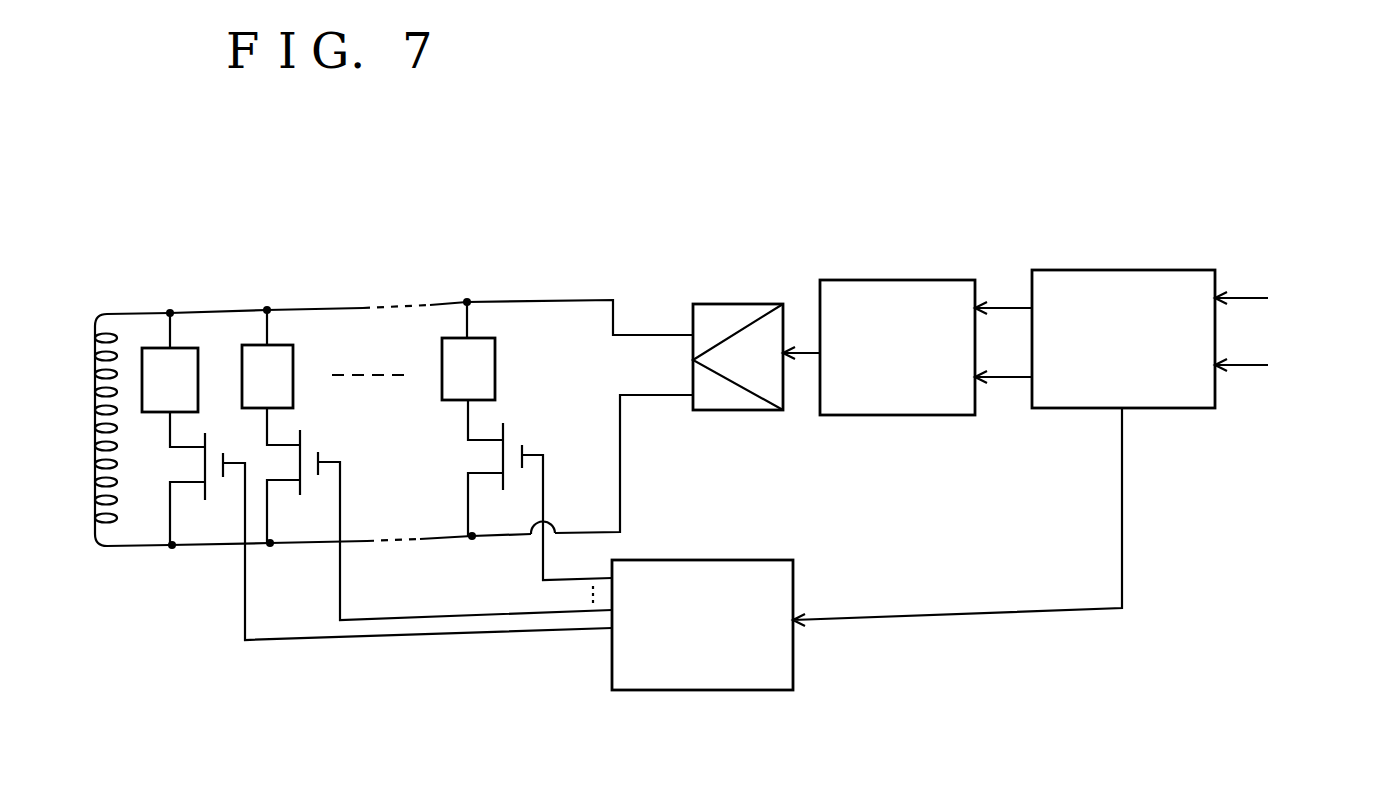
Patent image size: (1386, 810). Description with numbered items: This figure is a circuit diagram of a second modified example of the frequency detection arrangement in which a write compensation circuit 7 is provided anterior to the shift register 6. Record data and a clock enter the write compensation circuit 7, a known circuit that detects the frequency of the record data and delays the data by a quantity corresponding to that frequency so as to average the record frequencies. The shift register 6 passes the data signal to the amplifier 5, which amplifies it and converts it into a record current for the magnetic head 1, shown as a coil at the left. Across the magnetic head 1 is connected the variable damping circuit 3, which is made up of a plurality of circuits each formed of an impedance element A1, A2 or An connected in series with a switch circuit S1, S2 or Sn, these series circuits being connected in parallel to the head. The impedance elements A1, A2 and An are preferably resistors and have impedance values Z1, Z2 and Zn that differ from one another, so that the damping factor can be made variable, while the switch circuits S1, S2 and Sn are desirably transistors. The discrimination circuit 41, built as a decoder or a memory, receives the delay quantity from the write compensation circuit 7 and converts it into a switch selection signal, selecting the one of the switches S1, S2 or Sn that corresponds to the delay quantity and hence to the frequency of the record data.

The magnetic head 1 is at (108, 308).
The variable damping circuit 3 is at (400, 410).
The amplifier 5 is at (738, 303).
The shift register 6 is at (921, 281).
The write compensation circuit 7 is at (1123, 270).
The discrimination circuit 41 is at (737, 688).
The impedance value Z1 is at (173, 380).
The impedance value Z2 is at (271, 377).
The impedance value Zn is at (472, 371).
The impedance element A1 is at (206, 338).
The impedance element A2 is at (301, 335).
The impedance element An is at (495, 346).
The switch circuit S1 is at (391, 528).
The switch circuit S2 is at (439, 515).
The switch circuit Sn is at (540, 490).